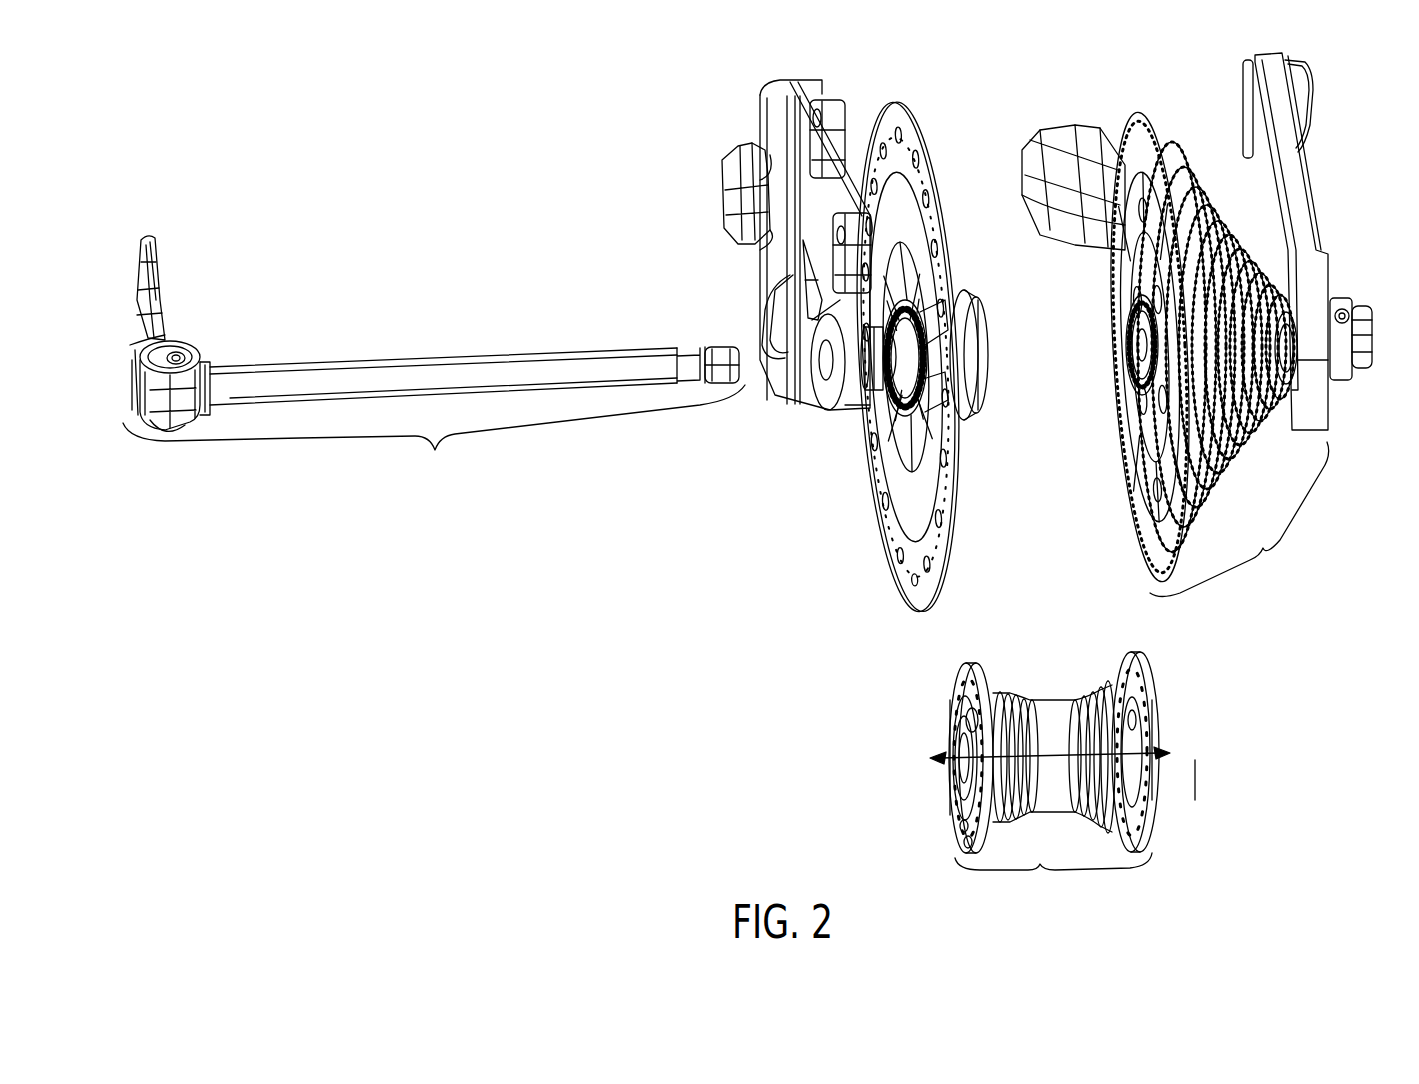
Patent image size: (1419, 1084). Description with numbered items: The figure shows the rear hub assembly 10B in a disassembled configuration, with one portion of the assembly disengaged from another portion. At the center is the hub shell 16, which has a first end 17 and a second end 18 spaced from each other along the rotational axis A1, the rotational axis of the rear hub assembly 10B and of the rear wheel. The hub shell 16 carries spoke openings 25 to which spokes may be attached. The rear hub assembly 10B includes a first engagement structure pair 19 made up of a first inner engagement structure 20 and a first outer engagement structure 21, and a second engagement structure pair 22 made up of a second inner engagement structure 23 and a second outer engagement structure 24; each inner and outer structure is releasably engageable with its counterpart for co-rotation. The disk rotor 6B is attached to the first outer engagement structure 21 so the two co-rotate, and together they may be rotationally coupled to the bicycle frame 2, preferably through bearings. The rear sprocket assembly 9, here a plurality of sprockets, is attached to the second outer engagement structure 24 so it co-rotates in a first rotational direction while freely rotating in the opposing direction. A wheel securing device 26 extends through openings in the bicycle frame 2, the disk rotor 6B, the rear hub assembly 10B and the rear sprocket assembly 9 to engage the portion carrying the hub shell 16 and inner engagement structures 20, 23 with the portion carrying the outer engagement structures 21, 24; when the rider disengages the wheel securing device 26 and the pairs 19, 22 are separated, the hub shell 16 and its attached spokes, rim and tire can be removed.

The bicycle frame 2 is at (760, 262).
The disk rotor 6B is at (892, 563).
The rear sprocket assembly 9 is at (1215, 353).
The rear hub assembly 10B is at (1209, 864).
The hub shell 16 is at (1054, 776).
The first end 17 is at (906, 755).
The second end 18 is at (1203, 745).
The first engagement structure pair 19 is at (983, 398).
The first inner engagement structure 20 is at (968, 712).
The first outer engagement structure 21 is at (976, 307).
The second engagement structure pair 22 is at (1120, 398).
The second inner engagement structure 23 is at (1150, 715).
The second outer engagement structure 24 is at (1121, 311).
The spoke openings 25 is at (964, 844).
The wheel securing device 26 is at (434, 355).
The rotational axis A1 is at (948, 762).